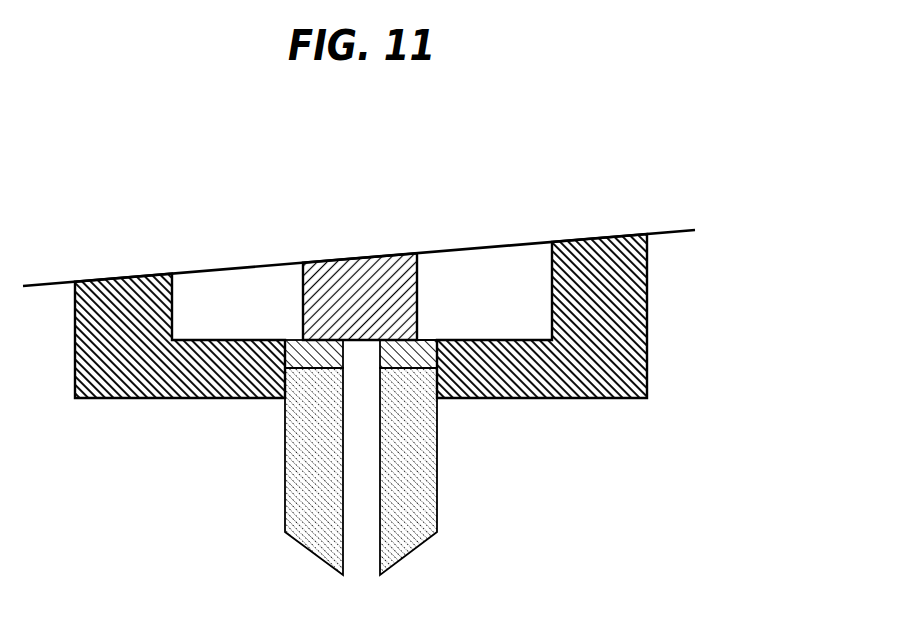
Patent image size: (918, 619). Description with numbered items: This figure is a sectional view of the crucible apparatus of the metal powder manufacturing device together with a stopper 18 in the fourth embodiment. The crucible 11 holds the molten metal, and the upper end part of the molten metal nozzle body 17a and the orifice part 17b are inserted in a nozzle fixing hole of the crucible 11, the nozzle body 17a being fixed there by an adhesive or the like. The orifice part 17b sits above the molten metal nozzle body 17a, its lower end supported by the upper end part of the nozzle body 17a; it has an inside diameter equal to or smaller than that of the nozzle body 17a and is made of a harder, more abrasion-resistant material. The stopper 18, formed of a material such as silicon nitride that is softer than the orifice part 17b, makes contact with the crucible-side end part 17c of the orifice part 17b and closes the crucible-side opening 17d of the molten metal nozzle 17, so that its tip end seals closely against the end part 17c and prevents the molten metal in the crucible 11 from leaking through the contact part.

The crucible 11 is at (610, 335).
The stopper 18 is at (380, 270).
The molten metal nozzle 17 is at (393, 385).
The molten metal nozzle body 17a is at (423, 505).
The orifice part 17b is at (408, 360).
The crucible-side end part of the orifice part 17c is at (425, 340).
The crucible-side opening of the molten metal nozzle 17d is at (355, 362).